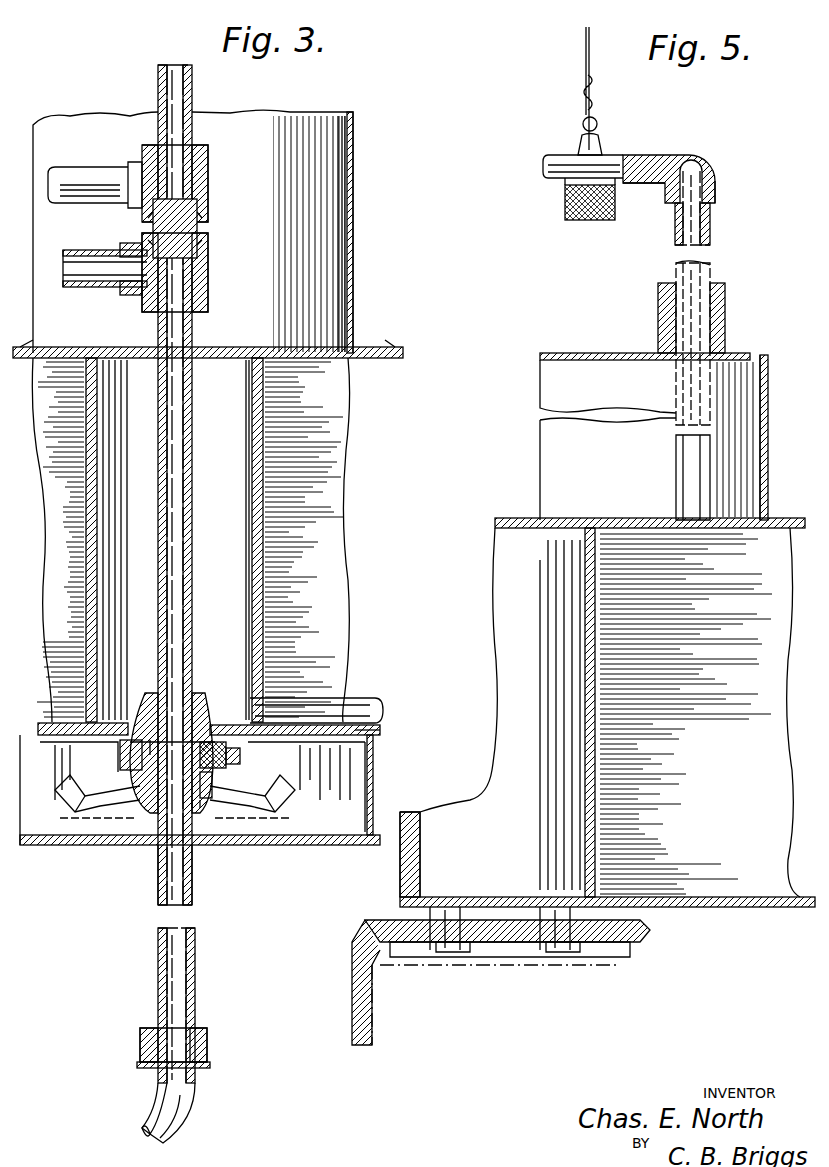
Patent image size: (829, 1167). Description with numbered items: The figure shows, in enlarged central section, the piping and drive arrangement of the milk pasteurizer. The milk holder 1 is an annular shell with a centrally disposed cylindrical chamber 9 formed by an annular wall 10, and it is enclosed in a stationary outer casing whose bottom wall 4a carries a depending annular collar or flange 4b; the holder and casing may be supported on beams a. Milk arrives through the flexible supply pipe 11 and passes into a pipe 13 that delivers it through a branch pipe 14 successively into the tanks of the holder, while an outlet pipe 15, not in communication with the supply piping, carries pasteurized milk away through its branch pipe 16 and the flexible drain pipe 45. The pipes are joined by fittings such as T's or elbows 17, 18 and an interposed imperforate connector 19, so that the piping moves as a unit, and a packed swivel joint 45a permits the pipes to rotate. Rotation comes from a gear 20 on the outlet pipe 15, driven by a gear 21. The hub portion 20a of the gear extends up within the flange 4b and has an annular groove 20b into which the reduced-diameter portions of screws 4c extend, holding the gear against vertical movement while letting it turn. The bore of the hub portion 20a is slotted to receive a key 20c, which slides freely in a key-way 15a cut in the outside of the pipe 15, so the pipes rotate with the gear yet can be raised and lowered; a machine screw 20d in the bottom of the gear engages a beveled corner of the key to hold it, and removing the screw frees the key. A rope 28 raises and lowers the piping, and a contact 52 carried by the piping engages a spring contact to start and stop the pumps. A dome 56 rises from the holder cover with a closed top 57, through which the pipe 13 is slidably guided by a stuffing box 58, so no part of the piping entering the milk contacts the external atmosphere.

In FIG. 3, the milk holder 1 is at (348, 580).
In FIG. 3, the cylindrical chamber 9 is at (214, 551).
In FIG. 5, the cylindrical chamber 9 is at (600, 712).
In FIG. 3, the annular wall 10 is at (262, 520).
In FIG. 5, the supply pipe 11 is at (650, 158).
In FIG. 3, the pipe 13 is at (158, 85).
In FIG. 5, the pipe 13 is at (712, 229).
In FIG. 3, the branch pipe 14 is at (113, 170).
In FIG. 3, the outlet pipe 15 is at (182, 905).
In FIG. 3, the key-way 15a is at (192, 888).
In FIG. 3, the branch pipe 16 is at (100, 288).
In FIG. 3, the fitting 17 is at (200, 182).
In FIG. 5, the fitting 17 is at (717, 172).
In FIG. 3, the fitting 18 is at (213, 264).
In FIG. 3, the imperforate connector 19 is at (176, 222).
In FIG. 3, the gear 20 is at (118, 812).
In FIG. 5, the gear 20 is at (650, 920).
In FIG. 3, the hub portion 20a is at (135, 760).
In FIG. 3, the annular groove 20b is at (152, 720).
In FIG. 3, the key 20c is at (200, 808).
In FIG. 3, the machine screw 20d is at (212, 800).
In FIG. 5, the gear 21 is at (352, 992).
In FIG. 5, the rope 28 is at (588, 63).
In FIG. 3, the drain pipe 45 is at (194, 1105).
In FIG. 3, the packed swivel joint 45a is at (210, 1060).
In FIG. 3, the bottom wall 4a is at (262, 742).
In FIG. 3, the annular collar or flange 4b is at (240, 760).
In FIG. 3, the screws 4c is at (232, 758).
In FIG. 3, the beams a is at (383, 736).
In FIG. 5, the contact 52 is at (583, 222).
In FIG. 3, the dome 56 is at (356, 262).
In FIG. 5, the dome 56 is at (770, 382).
In FIG. 5, the closed top 57 is at (576, 352).
In FIG. 5, the stuffing box 58 is at (726, 305).